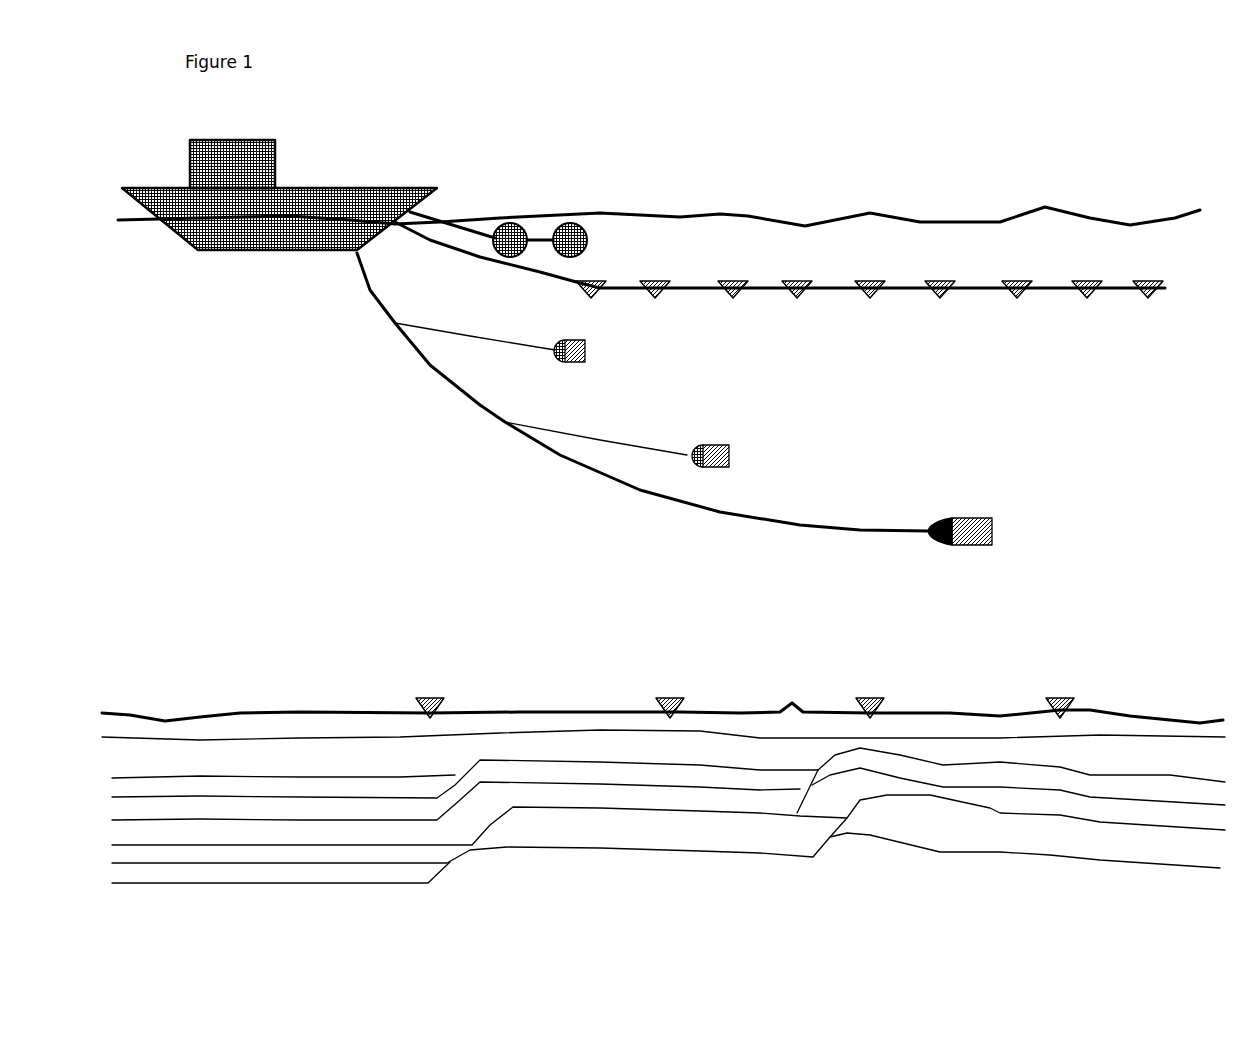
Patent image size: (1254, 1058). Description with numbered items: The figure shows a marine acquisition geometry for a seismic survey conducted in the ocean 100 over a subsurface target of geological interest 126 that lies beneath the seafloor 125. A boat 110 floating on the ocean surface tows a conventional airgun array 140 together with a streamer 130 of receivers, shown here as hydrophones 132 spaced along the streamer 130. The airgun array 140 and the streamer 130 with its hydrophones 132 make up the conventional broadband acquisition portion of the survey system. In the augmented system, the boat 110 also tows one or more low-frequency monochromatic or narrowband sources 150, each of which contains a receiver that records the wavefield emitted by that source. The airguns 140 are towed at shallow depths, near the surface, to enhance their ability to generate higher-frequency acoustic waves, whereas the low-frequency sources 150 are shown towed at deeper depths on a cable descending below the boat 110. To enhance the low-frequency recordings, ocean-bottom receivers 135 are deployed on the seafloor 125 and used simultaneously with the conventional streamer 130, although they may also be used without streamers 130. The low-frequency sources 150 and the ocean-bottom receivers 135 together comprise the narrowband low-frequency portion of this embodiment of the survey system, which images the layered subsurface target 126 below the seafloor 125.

The ocean 100 is at (748, 216).
The boat 110 is at (276, 141).
The seafloor 125 is at (228, 715).
The subsurface target of geological interest 126 is at (650, 840).
The streamer 130 is at (1172, 268).
The hydrophones 132 is at (735, 279).
The ocean-bottom receivers 135 is at (444, 700).
The airgun array 140 is at (507, 223).
The low-frequency monochromatic or narrowband sources 150 is at (587, 340).